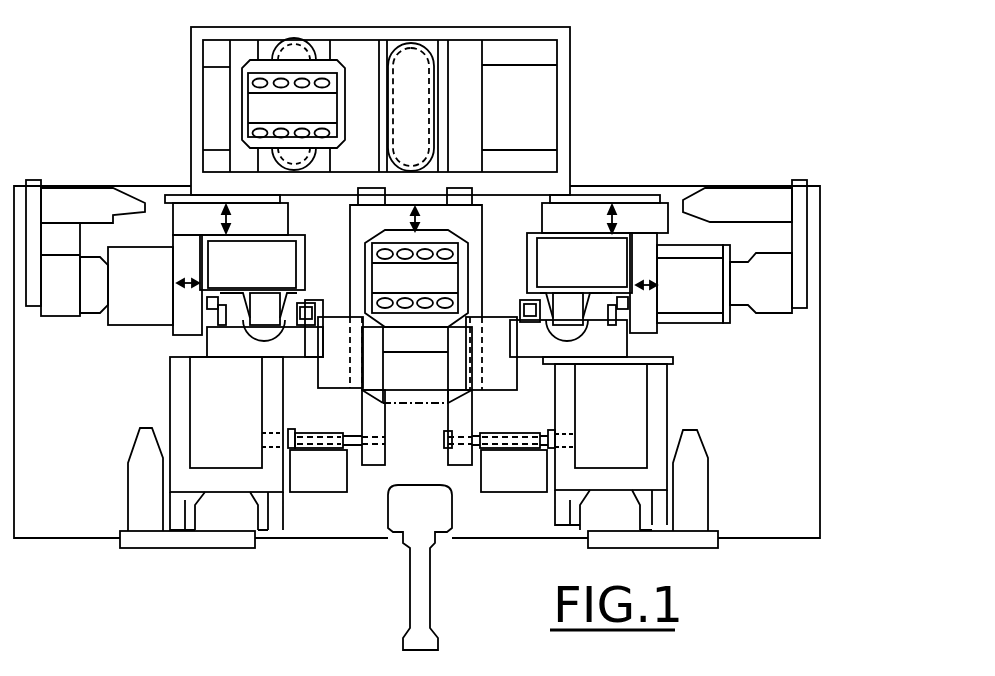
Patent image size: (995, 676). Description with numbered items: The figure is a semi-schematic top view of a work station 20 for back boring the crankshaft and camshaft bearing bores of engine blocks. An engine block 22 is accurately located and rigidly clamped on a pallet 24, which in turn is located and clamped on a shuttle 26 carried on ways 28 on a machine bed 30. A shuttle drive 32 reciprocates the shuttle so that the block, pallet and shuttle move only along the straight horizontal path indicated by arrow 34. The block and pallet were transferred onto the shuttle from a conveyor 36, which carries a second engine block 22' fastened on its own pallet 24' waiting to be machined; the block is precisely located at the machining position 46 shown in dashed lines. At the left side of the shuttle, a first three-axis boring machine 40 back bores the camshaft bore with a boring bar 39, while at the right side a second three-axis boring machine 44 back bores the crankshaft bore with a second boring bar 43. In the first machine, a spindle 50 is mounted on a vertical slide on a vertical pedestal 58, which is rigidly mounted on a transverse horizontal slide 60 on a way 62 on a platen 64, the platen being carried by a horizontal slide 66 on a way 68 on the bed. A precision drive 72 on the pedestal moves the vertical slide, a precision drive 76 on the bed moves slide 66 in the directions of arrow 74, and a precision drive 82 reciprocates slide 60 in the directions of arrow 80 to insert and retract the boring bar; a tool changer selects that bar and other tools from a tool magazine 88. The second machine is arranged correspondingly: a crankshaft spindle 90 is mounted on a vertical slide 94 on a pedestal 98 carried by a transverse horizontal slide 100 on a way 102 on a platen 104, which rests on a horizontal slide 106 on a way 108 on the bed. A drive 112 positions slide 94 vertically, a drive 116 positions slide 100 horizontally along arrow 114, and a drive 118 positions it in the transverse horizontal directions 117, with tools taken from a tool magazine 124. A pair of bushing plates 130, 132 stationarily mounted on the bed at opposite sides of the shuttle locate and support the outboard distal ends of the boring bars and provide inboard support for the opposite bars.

The work station 20 is at (596, 106).
The engine block 22 is at (449, 272).
The second engine block 22' is at (230, 105).
The pallet 24 is at (448, 263).
The pallet 24' is at (230, 91).
The shuttle 26 is at (352, 205).
The ways 28 is at (416, 210).
The machine bed 30 is at (427, 457).
The shuttle drive 32 is at (410, 583).
The arrow 34 is at (474, 206).
The conveyor 36 is at (357, 52).
The boring bar 39 is at (350, 428).
The first three-axis boring machine 40 is at (172, 352).
The second boring bar 43 is at (470, 452).
The three-axis boring machine 44 is at (683, 339).
The machining position 46 is at (465, 404).
The spindle 50 is at (255, 348).
The vertical pedestal 58 is at (290, 242).
The transverse horizontal slide 60 is at (165, 212).
The way 62 is at (95, 305).
The platen 64 is at (113, 318).
The horizontal slide 66 is at (185, 357).
The way 68 is at (172, 425).
The precision drive 72 is at (262, 300).
The arrow 74 is at (222, 210).
The precision drive 76 is at (225, 548).
The arrow 80 is at (178, 283).
The precision drive 82 is at (35, 190).
The tool magazine 88 is at (318, 493).
The crankshaft spindle 90 is at (535, 355).
The vertical slide 94 is at (603, 357).
The pedestal 98 is at (612, 245).
The transverse horizontal slide 100 is at (662, 282).
The way 102 is at (728, 262).
The platen 104 is at (678, 225).
The horizontal slide 106 is at (672, 360).
The way 108 is at (640, 425).
The drive 112 is at (562, 300).
The arrow 114 is at (610, 210).
The drive 116 is at (648, 548).
The horizontal directions 117 is at (655, 290).
The drive 118 is at (770, 315).
The tool magazine 124 is at (530, 493).
The bushing plate 130 is at (500, 313).
The bushing plate 132 is at (318, 295).